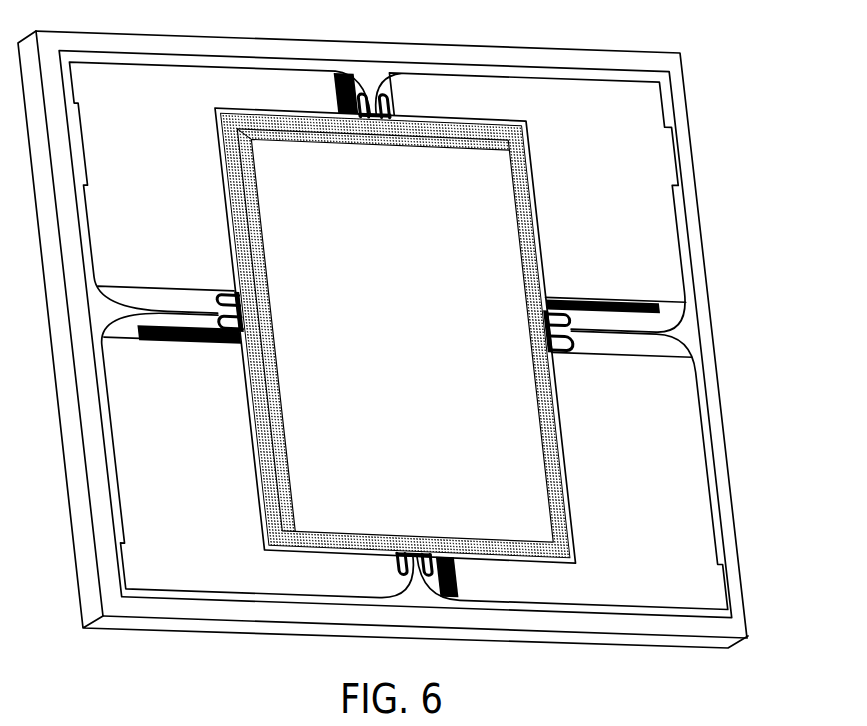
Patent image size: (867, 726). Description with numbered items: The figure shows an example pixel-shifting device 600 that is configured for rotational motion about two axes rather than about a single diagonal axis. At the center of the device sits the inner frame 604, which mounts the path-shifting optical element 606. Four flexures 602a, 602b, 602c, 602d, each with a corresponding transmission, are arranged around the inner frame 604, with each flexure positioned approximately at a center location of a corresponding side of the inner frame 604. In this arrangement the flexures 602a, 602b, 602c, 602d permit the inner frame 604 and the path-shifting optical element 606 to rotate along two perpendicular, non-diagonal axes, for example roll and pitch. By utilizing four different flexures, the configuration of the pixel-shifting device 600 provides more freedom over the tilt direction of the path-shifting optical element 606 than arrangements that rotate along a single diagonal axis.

The pixel-shifting device 600 is at (736, 47).
The flexure 602a is at (385, 97).
The flexure 602b is at (188, 310).
The flexure 602c is at (405, 578).
The flexure 602d is at (586, 333).
The inner frame 604 is at (222, 133).
The path-shifting optical element 606 is at (247, 197).